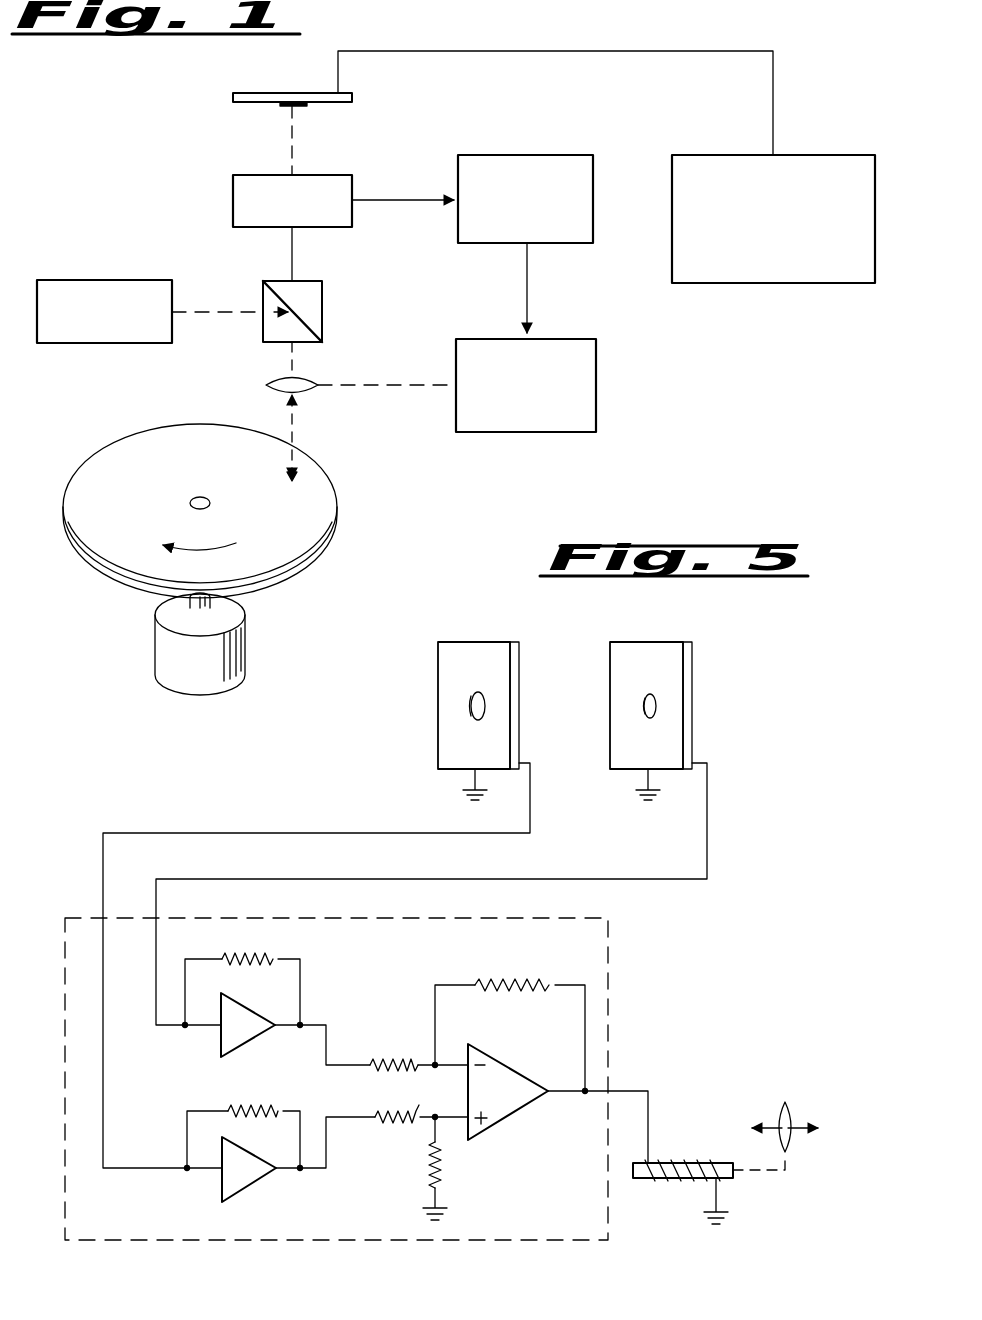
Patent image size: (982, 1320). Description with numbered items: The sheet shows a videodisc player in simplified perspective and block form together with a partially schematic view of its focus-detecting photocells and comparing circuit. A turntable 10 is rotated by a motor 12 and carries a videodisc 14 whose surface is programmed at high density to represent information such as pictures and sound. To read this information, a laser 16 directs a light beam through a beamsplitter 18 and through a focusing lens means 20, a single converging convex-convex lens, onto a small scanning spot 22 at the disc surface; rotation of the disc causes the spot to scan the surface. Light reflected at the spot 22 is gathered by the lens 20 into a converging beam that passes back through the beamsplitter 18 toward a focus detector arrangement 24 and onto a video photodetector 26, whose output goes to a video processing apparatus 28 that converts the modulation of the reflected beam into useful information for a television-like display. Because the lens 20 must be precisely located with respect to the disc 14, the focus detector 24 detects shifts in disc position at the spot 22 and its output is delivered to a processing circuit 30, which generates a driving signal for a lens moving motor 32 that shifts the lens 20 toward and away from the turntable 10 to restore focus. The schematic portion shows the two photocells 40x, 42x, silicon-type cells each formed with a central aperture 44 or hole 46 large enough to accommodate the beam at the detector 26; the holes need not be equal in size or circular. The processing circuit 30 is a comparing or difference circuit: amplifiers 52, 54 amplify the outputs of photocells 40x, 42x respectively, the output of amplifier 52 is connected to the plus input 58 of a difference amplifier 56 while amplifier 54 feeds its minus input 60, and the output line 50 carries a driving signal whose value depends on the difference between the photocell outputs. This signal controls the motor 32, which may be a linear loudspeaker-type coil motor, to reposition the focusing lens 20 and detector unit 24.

In FIG. 1, the turntable 10 is at (289, 569).
In FIG. 1, the motor 12 is at (162, 658).
In FIG. 1, the videodisc 14 is at (318, 522).
In FIG. 1, the laser 16 is at (113, 280).
In FIG. 1, the beamsplitter 18 is at (270, 282).
In FIG. 1, the focusing lens means 20 is at (271, 389).
In FIG. 5, the focusing lens means 20 is at (782, 1120).
In FIG. 1, the scanning spot 22 is at (292, 490).
In FIG. 1, the focus detector arrangement 24 is at (233, 200).
In FIG. 1, the video photodetector 26 is at (233, 98).
In FIG. 1, the video processing apparatus 28 is at (703, 155).
In FIG. 1, the processing circuit 30 is at (527, 155).
In FIG. 5, the processing circuit 30 is at (608, 963).
In FIG. 1, the lens moving motor 32 is at (572, 339).
In FIG. 5, the lens moving motor 32 is at (685, 1156).
In FIG. 5, the photocell 40x is at (472, 645).
In FIG. 5, the photocell 42x is at (650, 645).
In FIG. 5, the aperture 44 is at (471, 706).
In FIG. 5, the hole 46 is at (644, 706).
In FIG. 5, the output line 50 is at (632, 1091).
In FIG. 5, the amplifier 52 is at (247, 1184).
In FIG. 5, the amplifier 54 is at (244, 1040).
In FIG. 5, the difference amplifier 56 is at (500, 1122).
In FIG. 5, the plus input 58 is at (453, 1120).
In FIG. 5, the minus input 60 is at (450, 1065).